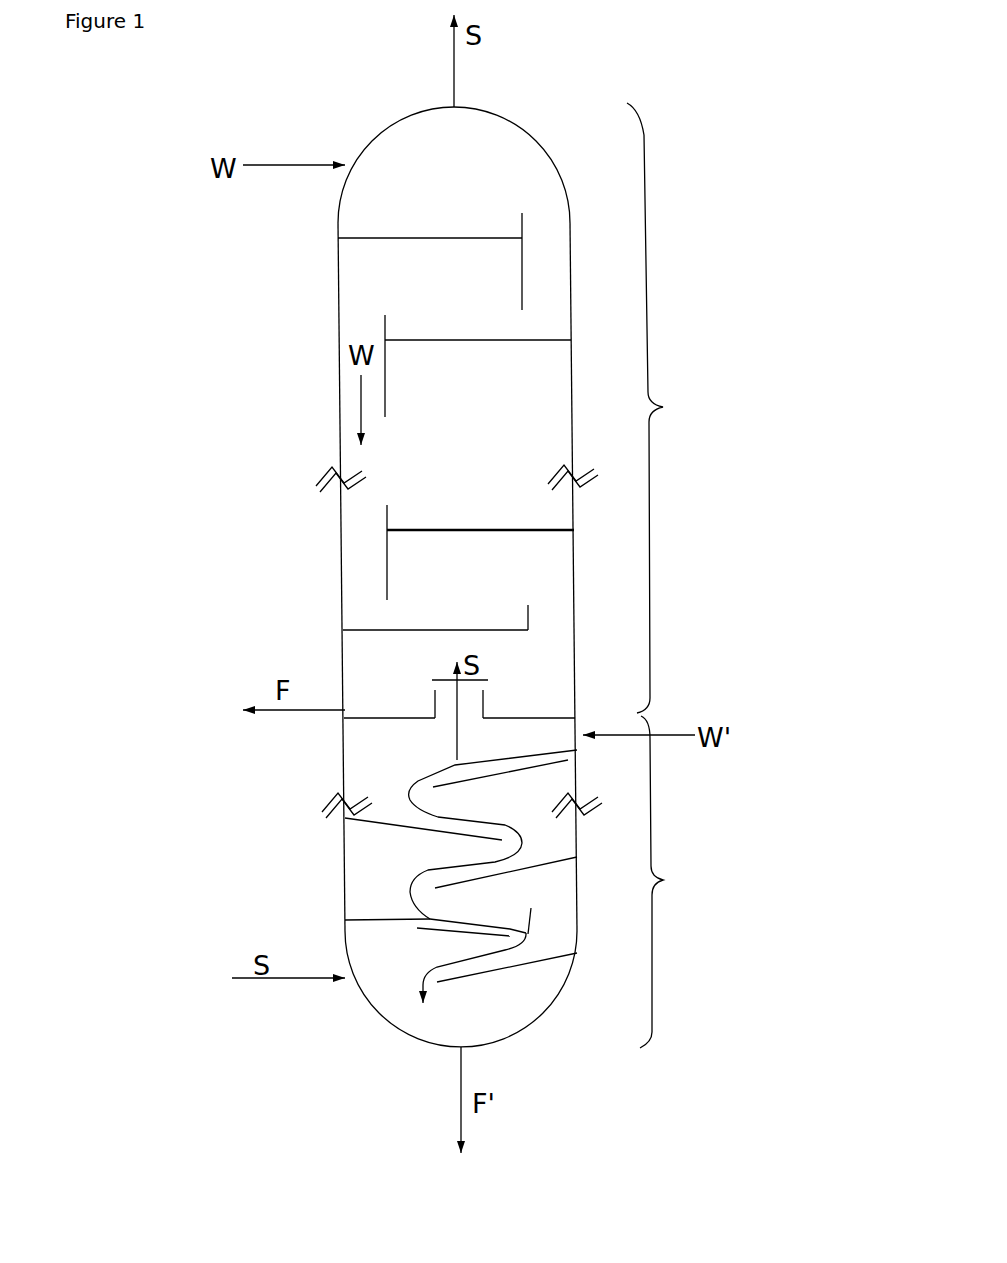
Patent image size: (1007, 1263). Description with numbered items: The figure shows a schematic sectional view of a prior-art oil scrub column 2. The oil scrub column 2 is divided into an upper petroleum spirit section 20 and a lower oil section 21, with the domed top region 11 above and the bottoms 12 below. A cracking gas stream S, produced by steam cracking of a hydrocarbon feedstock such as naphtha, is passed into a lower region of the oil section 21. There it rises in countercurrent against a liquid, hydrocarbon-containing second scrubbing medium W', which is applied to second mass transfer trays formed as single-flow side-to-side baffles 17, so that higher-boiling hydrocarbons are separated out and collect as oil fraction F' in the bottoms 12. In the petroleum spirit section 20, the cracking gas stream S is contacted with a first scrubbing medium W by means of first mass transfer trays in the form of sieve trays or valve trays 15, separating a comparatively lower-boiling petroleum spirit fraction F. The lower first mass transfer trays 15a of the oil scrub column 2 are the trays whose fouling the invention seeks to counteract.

The oil scrub column 2 is at (481, 565).
The upper head of column 11 is at (468, 123).
The bottoms 12 is at (495, 1025).
The first mass transfer trays 15 is at (490, 340).
The lower first mass transfer trays 15a is at (447, 628).
The single-flow side-to-side baffles 17 is at (355, 876).
The petroleum spirit section 20 is at (668, 408).
The oil section 21 is at (673, 882).